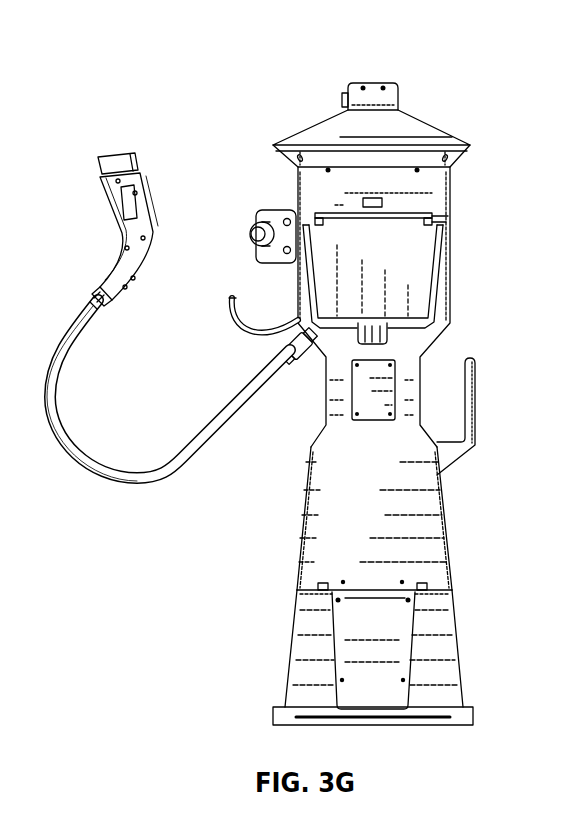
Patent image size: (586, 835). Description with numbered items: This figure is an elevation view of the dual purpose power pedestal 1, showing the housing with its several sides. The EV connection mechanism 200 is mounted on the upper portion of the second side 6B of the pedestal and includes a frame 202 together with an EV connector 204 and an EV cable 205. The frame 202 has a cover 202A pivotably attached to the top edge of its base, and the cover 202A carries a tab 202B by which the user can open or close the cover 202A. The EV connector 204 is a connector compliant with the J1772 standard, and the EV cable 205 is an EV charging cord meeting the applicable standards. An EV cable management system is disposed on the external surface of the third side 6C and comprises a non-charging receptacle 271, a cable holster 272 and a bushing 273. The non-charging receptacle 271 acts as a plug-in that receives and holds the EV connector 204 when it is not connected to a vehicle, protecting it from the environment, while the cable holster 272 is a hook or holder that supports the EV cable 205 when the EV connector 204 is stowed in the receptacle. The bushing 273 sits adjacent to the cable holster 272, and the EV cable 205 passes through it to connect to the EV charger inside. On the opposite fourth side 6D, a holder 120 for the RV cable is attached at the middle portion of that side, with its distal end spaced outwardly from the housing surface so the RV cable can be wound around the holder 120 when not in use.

The dual purpose power pedestal 1 is at (102, 56).
The holder 120 is at (475, 368).
The EV connection mechanism 200 is at (350, 216).
The frame 202 is at (432, 216).
The cover 202A is at (426, 263).
The tab 202B is at (375, 350).
The EV connector 204 is at (108, 204).
The EV cable 205 is at (85, 470).
The non-charging receptacle 271 is at (252, 236).
The cable holster 272 is at (232, 310).
The bushing 273 is at (285, 345).
The second side 6B is at (428, 512).
The third side 6C is at (302, 507).
The fourth side 6D is at (455, 620).